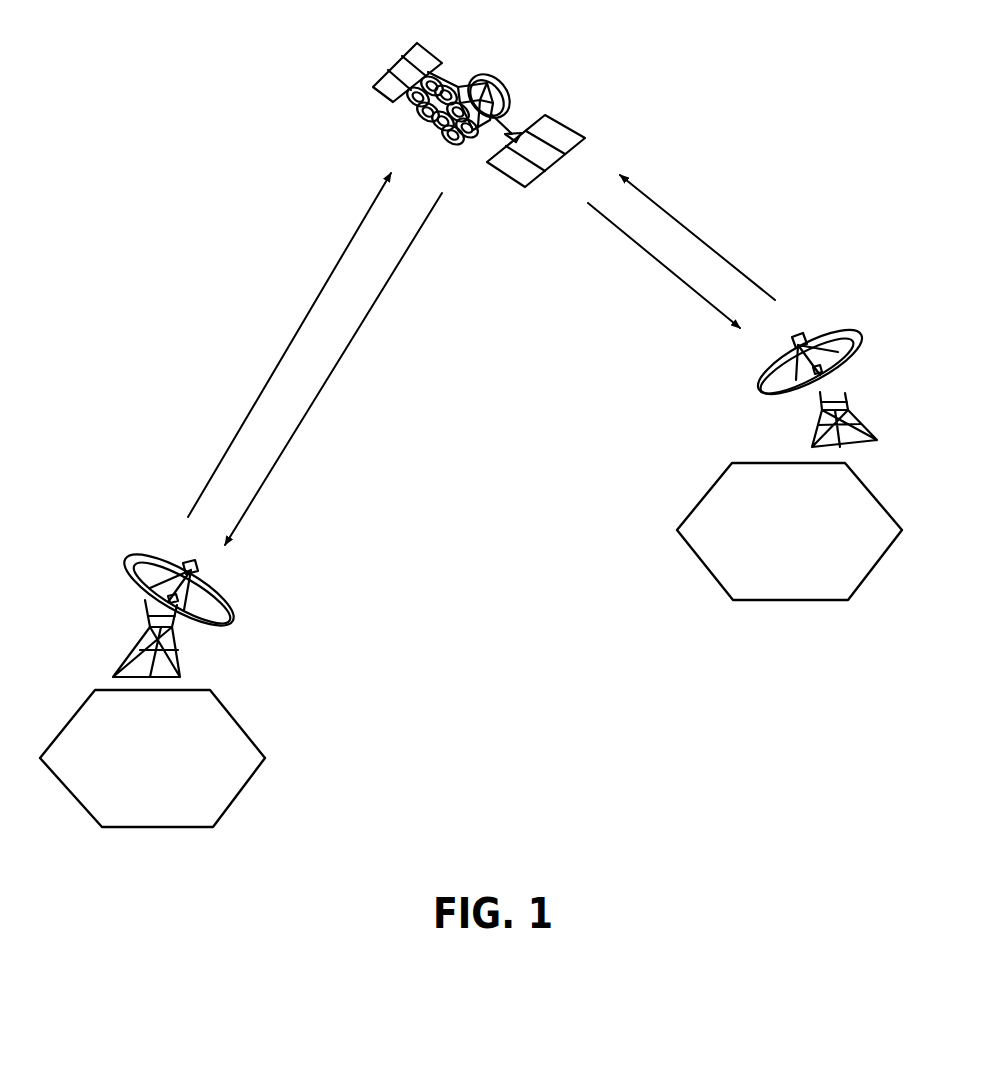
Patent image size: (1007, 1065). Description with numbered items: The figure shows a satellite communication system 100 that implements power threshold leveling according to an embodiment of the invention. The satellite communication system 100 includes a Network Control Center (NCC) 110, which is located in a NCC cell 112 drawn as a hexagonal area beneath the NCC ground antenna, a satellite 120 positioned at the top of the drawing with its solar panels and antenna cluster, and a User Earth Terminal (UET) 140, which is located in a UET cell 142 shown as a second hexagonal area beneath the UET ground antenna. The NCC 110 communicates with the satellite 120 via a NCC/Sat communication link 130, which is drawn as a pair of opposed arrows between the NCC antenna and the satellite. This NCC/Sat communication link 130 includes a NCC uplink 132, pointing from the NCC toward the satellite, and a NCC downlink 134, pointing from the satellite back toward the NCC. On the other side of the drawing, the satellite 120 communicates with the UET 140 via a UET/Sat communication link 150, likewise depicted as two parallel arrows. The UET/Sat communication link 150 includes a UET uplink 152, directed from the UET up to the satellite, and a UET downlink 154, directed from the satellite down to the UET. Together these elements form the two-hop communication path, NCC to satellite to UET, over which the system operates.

The satellite communication system 100 is at (246, 128).
The Network Control Center (NCC) 110 is at (838, 327).
The NCC cell 112 is at (873, 495).
The satellite 120 is at (498, 86).
The NCC/Sat communication link 130 is at (698, 194).
The NCC uplink 132 is at (723, 256).
The NCC downlink 134 is at (708, 304).
The User Earth Terminal (UET) 140 is at (223, 595).
The UET cell 142 is at (257, 740).
The UET/Sat communication link 150 is at (262, 333).
The UET uplink 152 is at (250, 408).
The UET downlink 154 is at (307, 415).